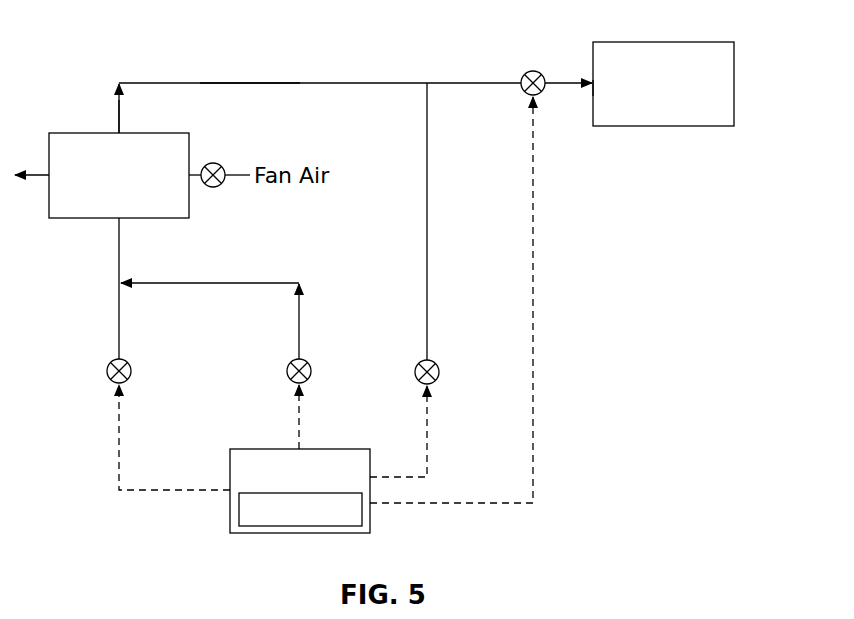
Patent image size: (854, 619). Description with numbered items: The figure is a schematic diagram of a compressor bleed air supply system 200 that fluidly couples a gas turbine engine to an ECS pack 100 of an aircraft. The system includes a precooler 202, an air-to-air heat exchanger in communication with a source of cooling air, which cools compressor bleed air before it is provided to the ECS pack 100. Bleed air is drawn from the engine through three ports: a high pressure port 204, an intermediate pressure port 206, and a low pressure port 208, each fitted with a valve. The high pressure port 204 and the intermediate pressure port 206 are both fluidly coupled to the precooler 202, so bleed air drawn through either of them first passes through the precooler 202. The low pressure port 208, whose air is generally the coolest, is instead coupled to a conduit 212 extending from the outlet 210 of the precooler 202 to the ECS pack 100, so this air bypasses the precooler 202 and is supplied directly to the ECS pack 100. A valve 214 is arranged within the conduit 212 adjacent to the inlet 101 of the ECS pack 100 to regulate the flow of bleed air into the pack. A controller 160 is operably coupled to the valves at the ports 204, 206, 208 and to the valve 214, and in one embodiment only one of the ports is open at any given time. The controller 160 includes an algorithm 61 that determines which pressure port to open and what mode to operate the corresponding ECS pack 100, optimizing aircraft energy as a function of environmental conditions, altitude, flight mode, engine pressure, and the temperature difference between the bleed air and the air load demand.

The compressor bleed air supply system 200 is at (114, 28).
The precooler 202 is at (129, 132).
The outlet 210 is at (117, 126).
The conduit 212 is at (266, 82).
The high pressure port 204 is at (131, 372).
The intermediate pressure port 206 is at (311, 372).
The low pressure port 208 is at (439, 372).
The valve 214 is at (531, 71).
The ECS pack 100 is at (656, 41).
The inlet 101 is at (592, 94).
The controller 160 is at (290, 448).
The algorithm 61 is at (238, 511).